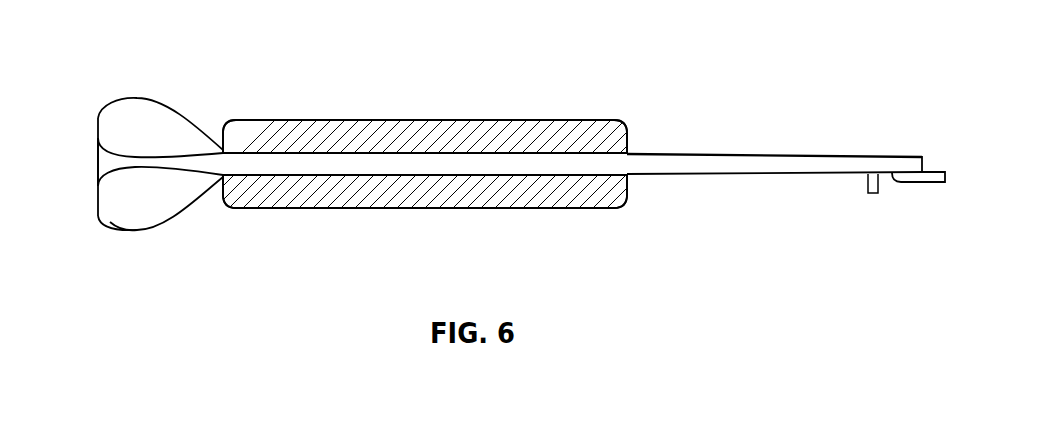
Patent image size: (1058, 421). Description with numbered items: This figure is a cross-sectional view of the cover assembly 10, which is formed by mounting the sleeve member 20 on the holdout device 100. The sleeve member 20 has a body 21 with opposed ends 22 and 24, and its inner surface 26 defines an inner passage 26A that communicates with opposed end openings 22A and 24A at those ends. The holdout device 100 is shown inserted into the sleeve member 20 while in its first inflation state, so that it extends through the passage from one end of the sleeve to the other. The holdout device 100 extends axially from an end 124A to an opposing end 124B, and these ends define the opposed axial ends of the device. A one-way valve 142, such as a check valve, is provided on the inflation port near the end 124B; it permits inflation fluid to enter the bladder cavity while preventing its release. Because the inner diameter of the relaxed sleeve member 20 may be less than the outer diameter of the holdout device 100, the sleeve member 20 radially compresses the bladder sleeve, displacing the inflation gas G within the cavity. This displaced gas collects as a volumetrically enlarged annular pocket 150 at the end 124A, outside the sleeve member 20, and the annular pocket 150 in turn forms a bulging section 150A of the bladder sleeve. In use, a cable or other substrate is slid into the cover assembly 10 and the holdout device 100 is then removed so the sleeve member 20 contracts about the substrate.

The cover assembly 10 is at (510, 32).
The end of bladder sleeve 124A is at (112, 88).
The annular pocket 150 is at (114, 120).
The inflation gas G is at (130, 145).
The bulging section 150A is at (124, 231).
The sleeve member 20 is at (470, 112).
The body 21 is at (395, 130).
The inner surface 26 is at (368, 177).
The end of sleeve member 22 is at (222, 146).
The end opening 22A is at (222, 181).
The end of sleeve member 24 is at (627, 140).
The end opening 24A is at (628, 178).
The inner passage 26A is at (302, 164).
The holdout device 100 is at (755, 140).
The end of bladder sleeve 124B is at (920, 145).
The one-way valve 142 is at (916, 183).